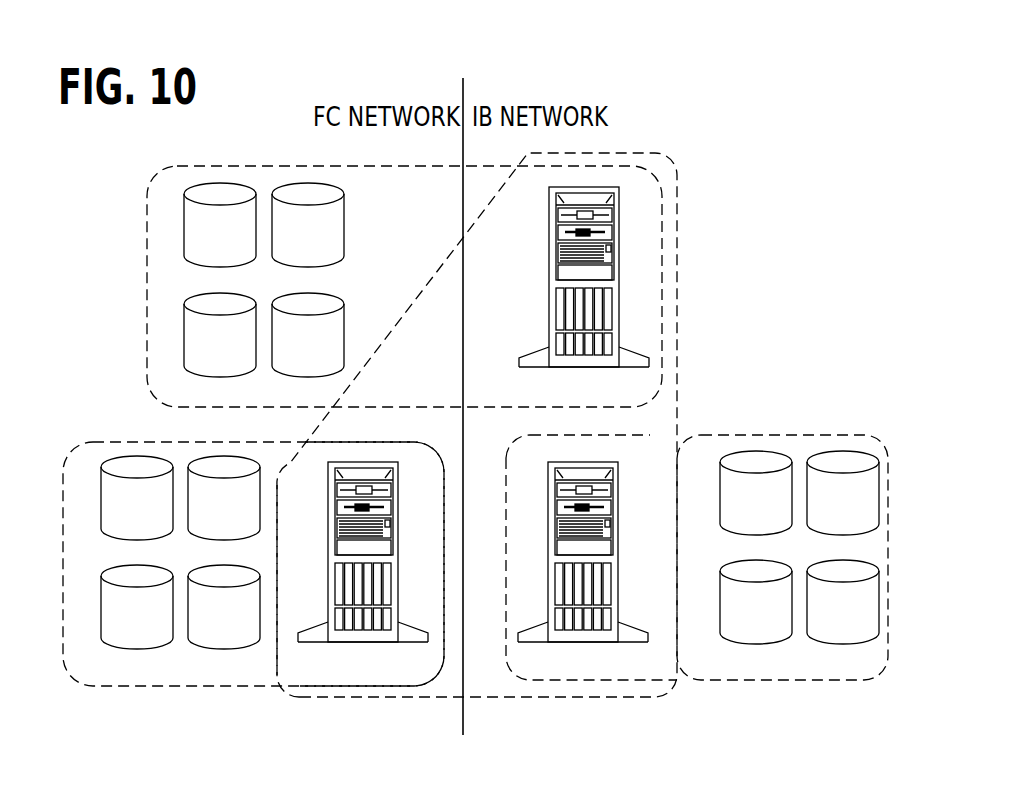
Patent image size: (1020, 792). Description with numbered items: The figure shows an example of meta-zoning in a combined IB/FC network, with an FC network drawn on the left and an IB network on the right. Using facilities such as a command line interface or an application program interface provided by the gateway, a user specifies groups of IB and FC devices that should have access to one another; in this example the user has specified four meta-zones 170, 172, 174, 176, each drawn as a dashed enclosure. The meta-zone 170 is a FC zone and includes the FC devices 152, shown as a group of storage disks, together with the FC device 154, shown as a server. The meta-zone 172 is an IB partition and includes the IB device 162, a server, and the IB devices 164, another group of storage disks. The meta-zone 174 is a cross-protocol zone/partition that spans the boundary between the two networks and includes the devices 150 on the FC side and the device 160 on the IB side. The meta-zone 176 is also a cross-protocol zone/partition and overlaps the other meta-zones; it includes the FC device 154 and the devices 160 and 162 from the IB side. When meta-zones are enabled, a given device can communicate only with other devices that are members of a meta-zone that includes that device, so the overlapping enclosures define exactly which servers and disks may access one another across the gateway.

The devices 150 is at (214, 267).
The FC devices 152 is at (130, 541).
The FC device 154 is at (378, 643).
The device 160 is at (600, 368).
The IB device 162 is at (597, 643).
The IB devices 164 is at (747, 535).
The meta-zone 170 is at (108, 687).
The meta-zone 172 is at (825, 681).
The meta-zone 174 is at (196, 408).
The meta-zone 176 is at (330, 698).